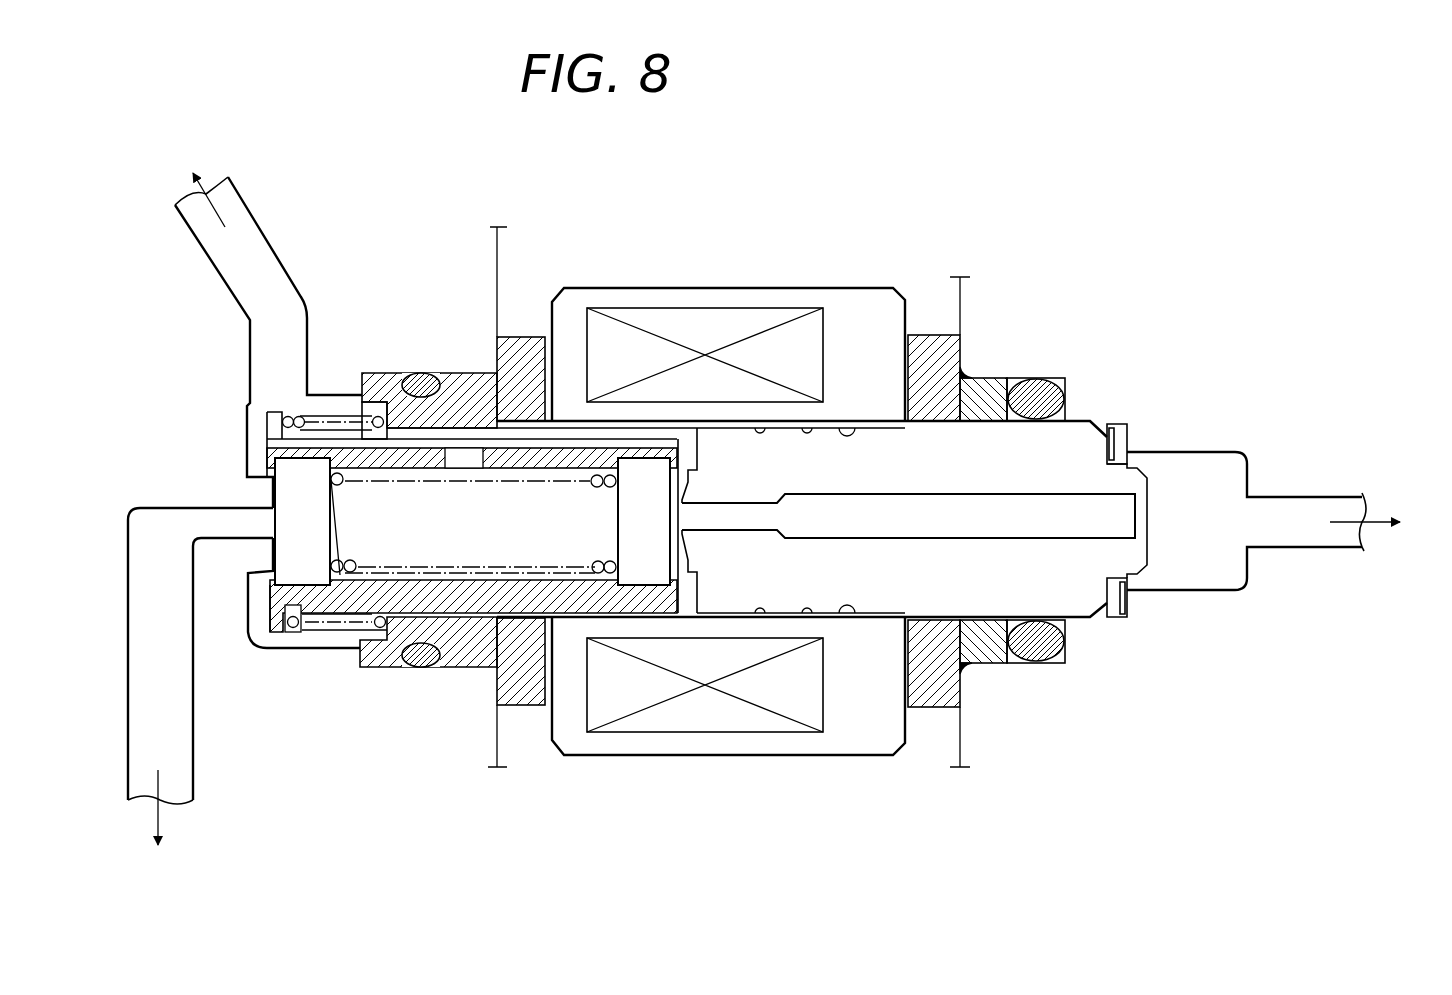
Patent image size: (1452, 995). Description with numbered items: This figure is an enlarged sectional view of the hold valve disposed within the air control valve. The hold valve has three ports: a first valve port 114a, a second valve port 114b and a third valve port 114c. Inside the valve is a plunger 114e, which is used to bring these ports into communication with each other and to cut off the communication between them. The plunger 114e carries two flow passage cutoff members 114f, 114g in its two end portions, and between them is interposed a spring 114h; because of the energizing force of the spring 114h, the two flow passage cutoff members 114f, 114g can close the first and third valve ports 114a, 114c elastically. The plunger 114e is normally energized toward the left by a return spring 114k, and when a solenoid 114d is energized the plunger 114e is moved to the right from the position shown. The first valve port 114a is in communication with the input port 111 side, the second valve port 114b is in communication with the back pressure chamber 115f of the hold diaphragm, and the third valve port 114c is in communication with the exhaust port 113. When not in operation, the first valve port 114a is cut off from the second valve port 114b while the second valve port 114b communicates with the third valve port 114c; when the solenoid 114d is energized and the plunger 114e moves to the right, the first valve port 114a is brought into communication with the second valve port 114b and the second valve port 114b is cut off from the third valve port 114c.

The input port 111 is at (163, 823).
The exhaust port 113 is at (1389, 525).
The back pressure chamber 115f is at (192, 184).
The first valve port 114a is at (172, 510).
The second valve port 114b is at (280, 273).
The third valve port 114c is at (1053, 530).
The solenoid 114d is at (713, 313).
The plunger 114e is at (387, 663).
The flow passage cutoff member 114f is at (310, 573).
The flow passage cutoff member 114g is at (643, 575).
The spring 114h is at (468, 570).
The return spring 114k is at (333, 420).